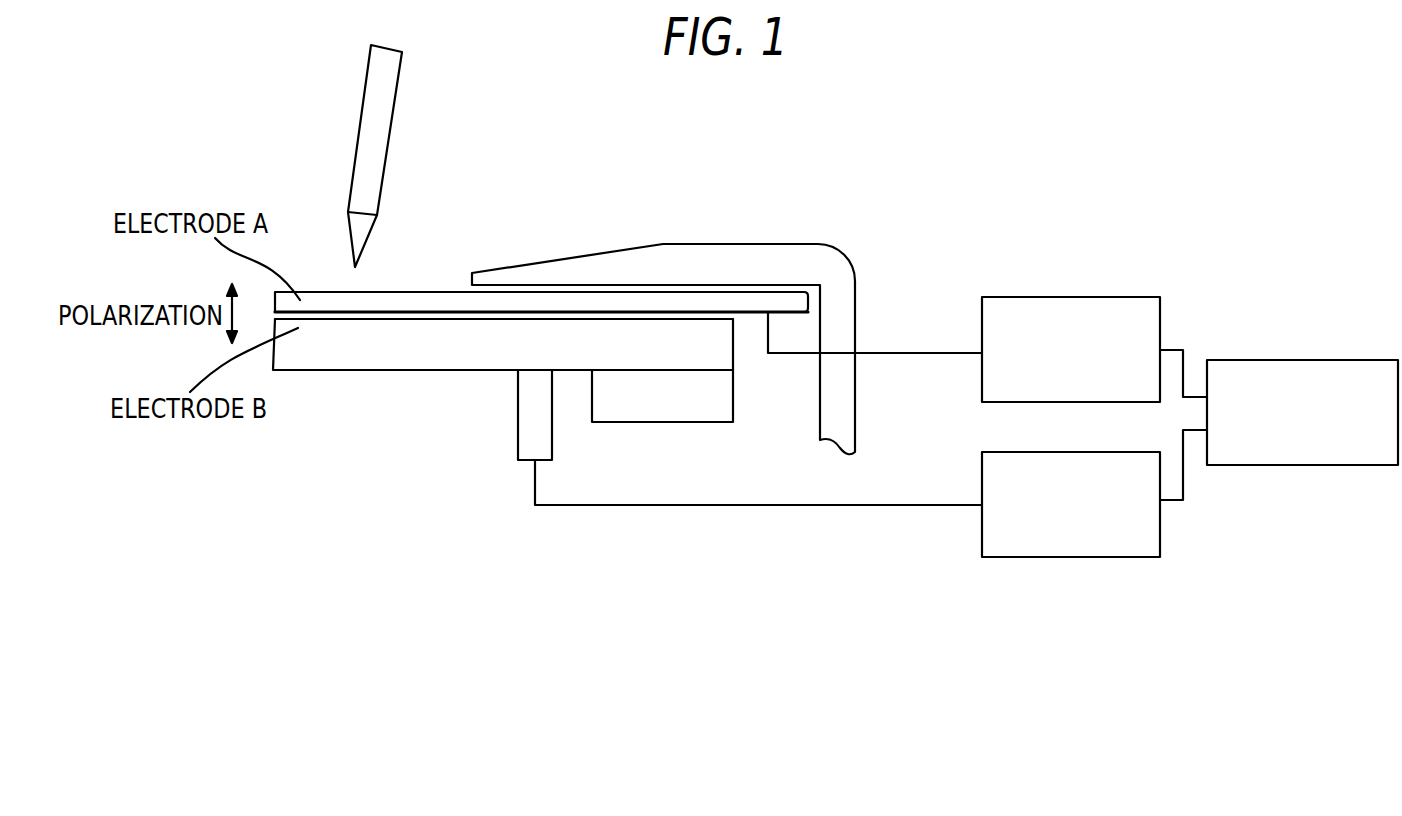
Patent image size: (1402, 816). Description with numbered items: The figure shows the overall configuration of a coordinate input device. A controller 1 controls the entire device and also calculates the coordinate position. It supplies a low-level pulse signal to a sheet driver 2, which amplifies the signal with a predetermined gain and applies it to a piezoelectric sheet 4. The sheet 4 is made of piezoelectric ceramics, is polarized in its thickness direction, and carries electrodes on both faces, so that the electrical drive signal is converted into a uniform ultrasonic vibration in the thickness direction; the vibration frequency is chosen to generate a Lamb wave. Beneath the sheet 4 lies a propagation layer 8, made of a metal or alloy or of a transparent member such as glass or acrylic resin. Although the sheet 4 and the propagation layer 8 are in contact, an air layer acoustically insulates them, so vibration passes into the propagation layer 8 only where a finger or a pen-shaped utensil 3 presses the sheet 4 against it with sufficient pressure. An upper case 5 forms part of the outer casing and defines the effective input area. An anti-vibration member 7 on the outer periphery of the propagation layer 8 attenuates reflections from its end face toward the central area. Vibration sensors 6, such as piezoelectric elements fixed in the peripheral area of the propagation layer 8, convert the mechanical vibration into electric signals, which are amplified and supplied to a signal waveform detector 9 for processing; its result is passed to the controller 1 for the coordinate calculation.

The controller 1 is at (1362, 359).
The sheet driver 2 is at (1121, 296).
The pen-shaped utensil 3 is at (398, 92).
The piezoelectric sheet 4 is at (418, 290).
The upper case 5 is at (743, 243).
The vibration sensors 6 is at (518, 444).
The anti-vibration member 7 is at (698, 413).
The propagation layer 8 is at (423, 372).
The signal waveform detector 9 is at (1120, 451).